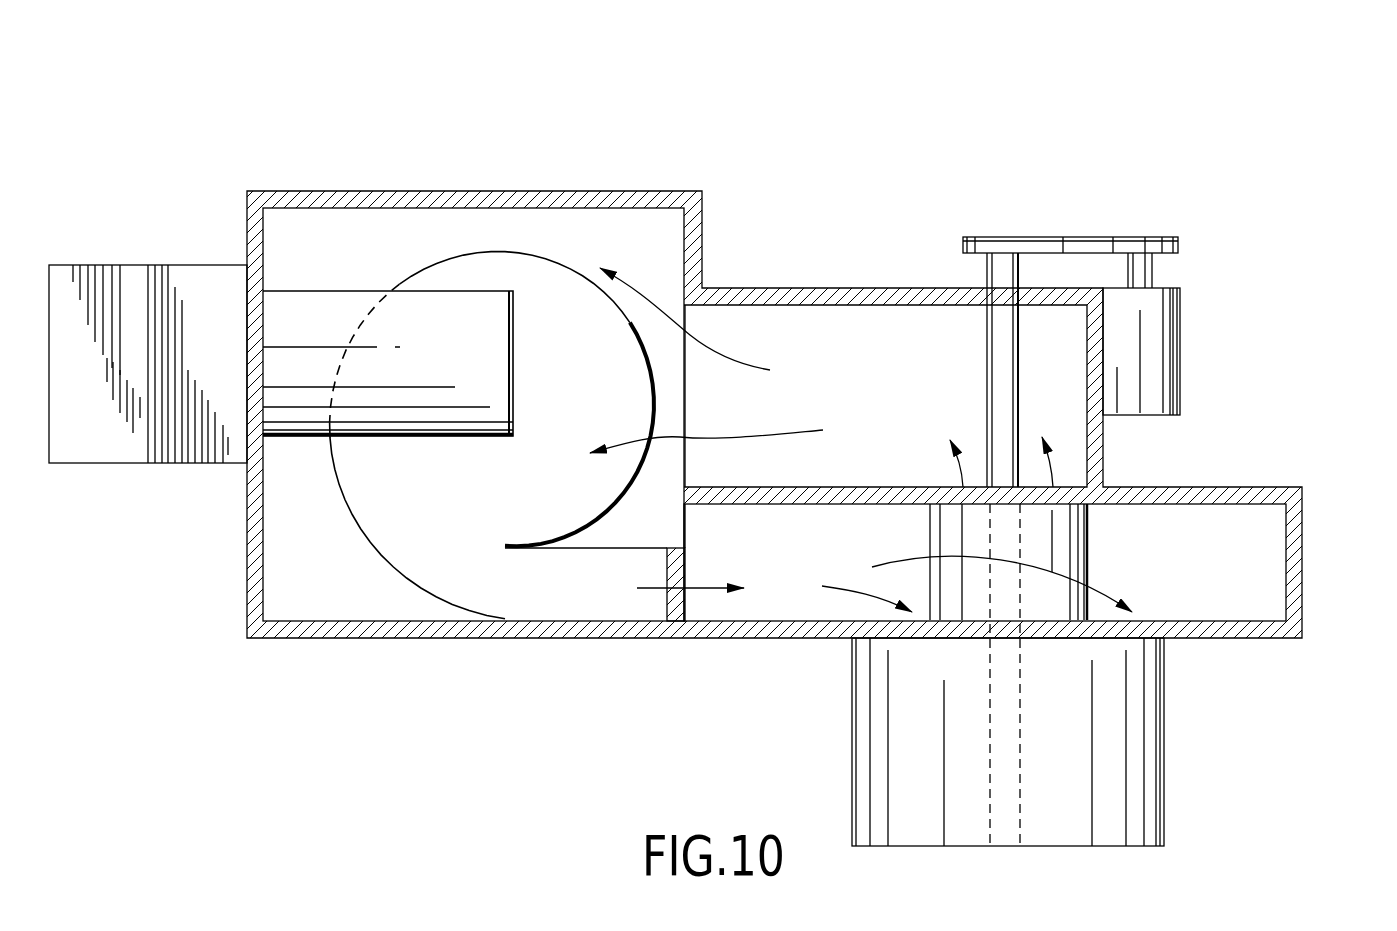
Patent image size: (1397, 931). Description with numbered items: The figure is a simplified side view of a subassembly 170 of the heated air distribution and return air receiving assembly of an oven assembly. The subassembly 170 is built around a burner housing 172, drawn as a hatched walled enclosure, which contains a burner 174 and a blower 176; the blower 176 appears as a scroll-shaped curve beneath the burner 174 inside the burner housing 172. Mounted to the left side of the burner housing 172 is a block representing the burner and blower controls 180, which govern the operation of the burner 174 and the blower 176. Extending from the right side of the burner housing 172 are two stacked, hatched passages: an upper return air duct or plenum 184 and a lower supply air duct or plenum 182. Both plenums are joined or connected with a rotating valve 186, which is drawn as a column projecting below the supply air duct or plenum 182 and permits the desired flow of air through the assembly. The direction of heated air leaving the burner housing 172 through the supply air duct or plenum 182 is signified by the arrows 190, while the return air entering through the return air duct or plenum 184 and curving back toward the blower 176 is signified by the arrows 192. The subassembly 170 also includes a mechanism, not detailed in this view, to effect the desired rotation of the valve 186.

The subassembly 170 is at (1095, 187).
The burner housing 172 is at (543, 190).
The burner 174 is at (353, 290).
The blower 176 is at (453, 613).
The burner and blower controls 180 is at (137, 264).
The supply air duct or plenum 182 is at (1303, 603).
The return air duct or plenum 184 is at (793, 287).
The rotating valve 186 is at (1168, 737).
The arrows signifying heated air 190 is at (872, 568).
The arrows signifying return air 192 is at (1042, 437).